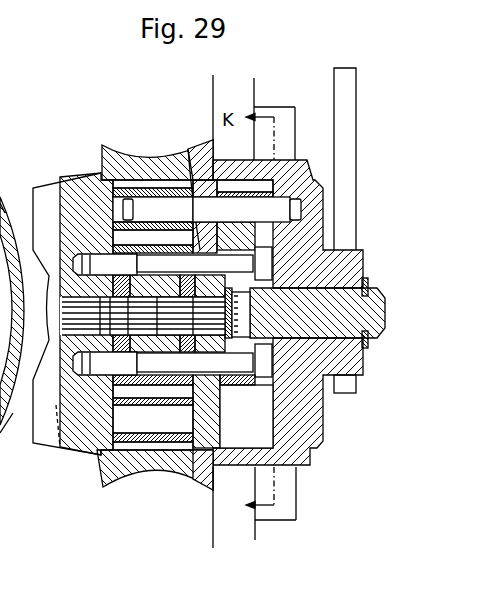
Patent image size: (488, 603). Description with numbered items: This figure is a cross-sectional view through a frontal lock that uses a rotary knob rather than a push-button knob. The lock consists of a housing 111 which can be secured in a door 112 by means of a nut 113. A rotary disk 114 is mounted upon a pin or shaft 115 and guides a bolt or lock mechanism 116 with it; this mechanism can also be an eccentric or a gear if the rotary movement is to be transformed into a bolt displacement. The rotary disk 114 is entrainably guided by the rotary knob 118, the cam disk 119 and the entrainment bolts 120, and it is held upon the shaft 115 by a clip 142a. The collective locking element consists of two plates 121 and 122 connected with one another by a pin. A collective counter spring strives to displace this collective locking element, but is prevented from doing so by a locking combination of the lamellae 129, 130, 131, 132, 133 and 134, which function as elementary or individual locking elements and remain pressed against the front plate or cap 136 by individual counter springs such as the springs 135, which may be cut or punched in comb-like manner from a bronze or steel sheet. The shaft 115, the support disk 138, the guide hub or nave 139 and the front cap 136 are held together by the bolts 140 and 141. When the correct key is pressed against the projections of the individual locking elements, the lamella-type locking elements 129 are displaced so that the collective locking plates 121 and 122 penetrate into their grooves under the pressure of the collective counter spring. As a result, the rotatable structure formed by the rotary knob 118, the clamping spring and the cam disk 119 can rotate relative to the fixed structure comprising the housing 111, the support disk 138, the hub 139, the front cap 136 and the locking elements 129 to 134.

The housing 111 is at (308, 466).
The door 112 is at (243, 508).
The nut 113 is at (290, 514).
The rotary disk 114 is at (347, 177).
The pin or shaft 115 is at (338, 330).
The bolt or lock mechanism 116 is at (347, 117).
The rotary knob 118 is at (142, 157).
The cam disk 119 is at (178, 193).
The entrainment bolts 120 is at (247, 216).
The plate 121 is at (137, 256).
The plate 122 is at (182, 283).
The lamella 129 is at (62, 313).
The lamella 130 is at (62, 320).
The lamella 131 is at (62, 327).
The lamella 132 is at (62, 333).
The lamella 133 is at (62, 307).
The lamella 134 is at (62, 302).
The individual counter spring 135 is at (229, 286).
The front plate or cap 136 is at (56, 215).
The support disk 138 is at (220, 418).
The guide hub or nave 139 is at (157, 350).
The bolt 140 is at (178, 150).
The bolt 141 is at (200, 485).
The clip 142a is at (365, 279).